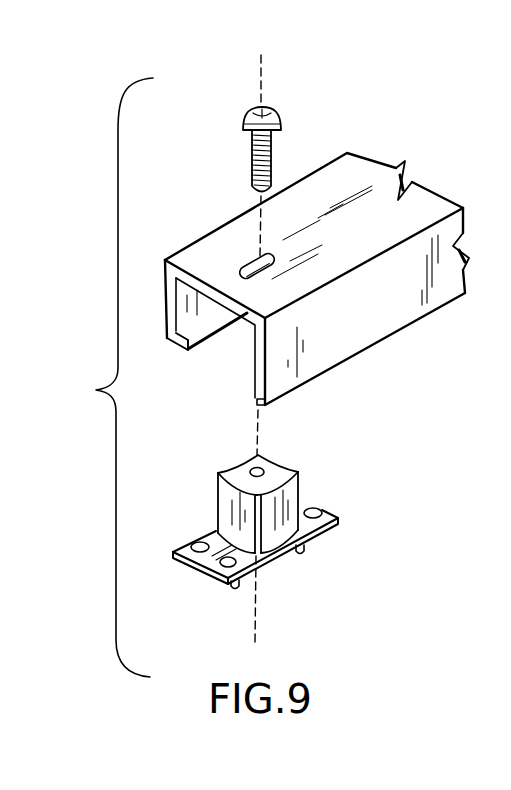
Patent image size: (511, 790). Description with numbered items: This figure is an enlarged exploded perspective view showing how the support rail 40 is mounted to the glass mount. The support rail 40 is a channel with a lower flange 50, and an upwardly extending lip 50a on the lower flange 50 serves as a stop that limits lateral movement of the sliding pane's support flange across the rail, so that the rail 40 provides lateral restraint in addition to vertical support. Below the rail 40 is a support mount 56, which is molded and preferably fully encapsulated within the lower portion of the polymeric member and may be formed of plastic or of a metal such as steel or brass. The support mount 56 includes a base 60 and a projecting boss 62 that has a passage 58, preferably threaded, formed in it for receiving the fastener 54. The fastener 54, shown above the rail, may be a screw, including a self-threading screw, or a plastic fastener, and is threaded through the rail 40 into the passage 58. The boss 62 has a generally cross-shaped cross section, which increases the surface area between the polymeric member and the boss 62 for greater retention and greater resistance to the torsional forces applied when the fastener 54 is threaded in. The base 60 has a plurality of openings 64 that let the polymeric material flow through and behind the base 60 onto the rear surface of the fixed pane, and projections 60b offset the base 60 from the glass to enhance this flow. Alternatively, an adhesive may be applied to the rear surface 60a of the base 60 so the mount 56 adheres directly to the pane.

The support rail 40 is at (367, 182).
The lower flange 50 is at (164, 295).
The upwardly extending lip 50a is at (205, 336).
The fastener 54 is at (299, 99).
The support mount 56 is at (352, 485).
The passage 58 is at (262, 462).
The base 60 is at (333, 528).
The rear surface 60a is at (277, 562).
The projections 60b is at (238, 586).
The projecting boss 62 is at (287, 467).
The openings 64 is at (197, 543).